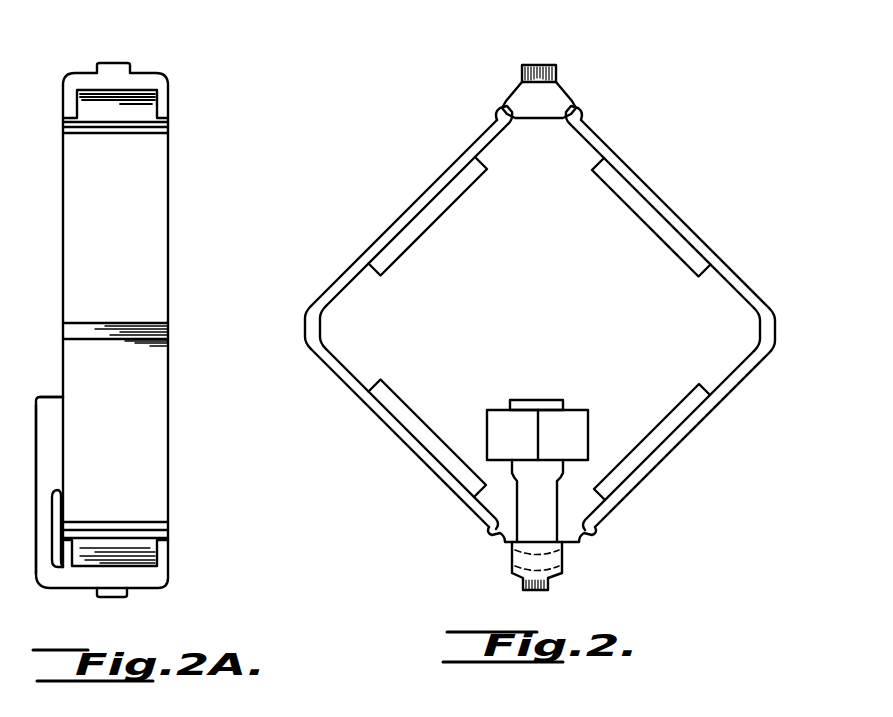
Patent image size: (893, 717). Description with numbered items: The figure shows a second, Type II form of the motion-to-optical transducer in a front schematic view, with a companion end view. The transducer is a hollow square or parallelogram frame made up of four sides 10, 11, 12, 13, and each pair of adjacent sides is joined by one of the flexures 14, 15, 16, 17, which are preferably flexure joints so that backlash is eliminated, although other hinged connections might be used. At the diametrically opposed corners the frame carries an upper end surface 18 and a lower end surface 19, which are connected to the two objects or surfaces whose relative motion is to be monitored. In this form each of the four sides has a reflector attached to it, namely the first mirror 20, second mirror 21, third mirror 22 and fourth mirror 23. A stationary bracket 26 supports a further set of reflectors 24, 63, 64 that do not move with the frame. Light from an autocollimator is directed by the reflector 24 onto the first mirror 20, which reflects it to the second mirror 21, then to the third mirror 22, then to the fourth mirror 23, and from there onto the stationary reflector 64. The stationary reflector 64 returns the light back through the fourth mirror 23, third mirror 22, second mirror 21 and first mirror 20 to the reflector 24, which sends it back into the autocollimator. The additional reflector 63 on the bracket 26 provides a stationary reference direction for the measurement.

In FIG. 2A, the side 10 is at (127, 441).
In FIG. 2, the side 10 is at (397, 432).
In FIG. 2A, the side 11 is at (115, 220).
In FIG. 2, the side 11 is at (430, 188).
In FIG. 2, the side 12 is at (628, 175).
In FIG. 2, the side 13 is at (680, 437).
In FIG. 2A, the flexure 14 is at (160, 331).
In FIG. 2, the flexure 14 is at (305, 330).
In FIG. 2A, the flexure 15 is at (135, 130).
In FIG. 2, the flexure 15 is at (497, 118).
In FIG. 2, the flexure 16 is at (777, 330).
In FIG. 2A, the flexure 17 is at (143, 527).
In FIG. 2, the flexure 17 is at (488, 535).
In FIG. 2A, the upper end surface 18 is at (98, 72).
In FIG. 2, the upper end surface 18 is at (522, 74).
In FIG. 2A, the lower end surface 19 is at (127, 595).
In FIG. 2, the lower end surface 19 is at (550, 585).
In FIG. 2, the first mirror 20 is at (670, 418).
In FIG. 2, the second mirror 21 is at (635, 208).
In FIG. 2, the third mirror 22 is at (455, 200).
In FIG. 2, the fourth mirror 23 is at (397, 412).
In FIG. 2, the reflector 24 is at (577, 415).
In FIG. 2A, the bracket 26 is at (45, 410).
In FIG. 2, the bracket 26 is at (543, 498).
In FIG. 2, the reflector 63 is at (518, 441).
In FIG. 2, the stationary reflector 64 is at (537, 423).